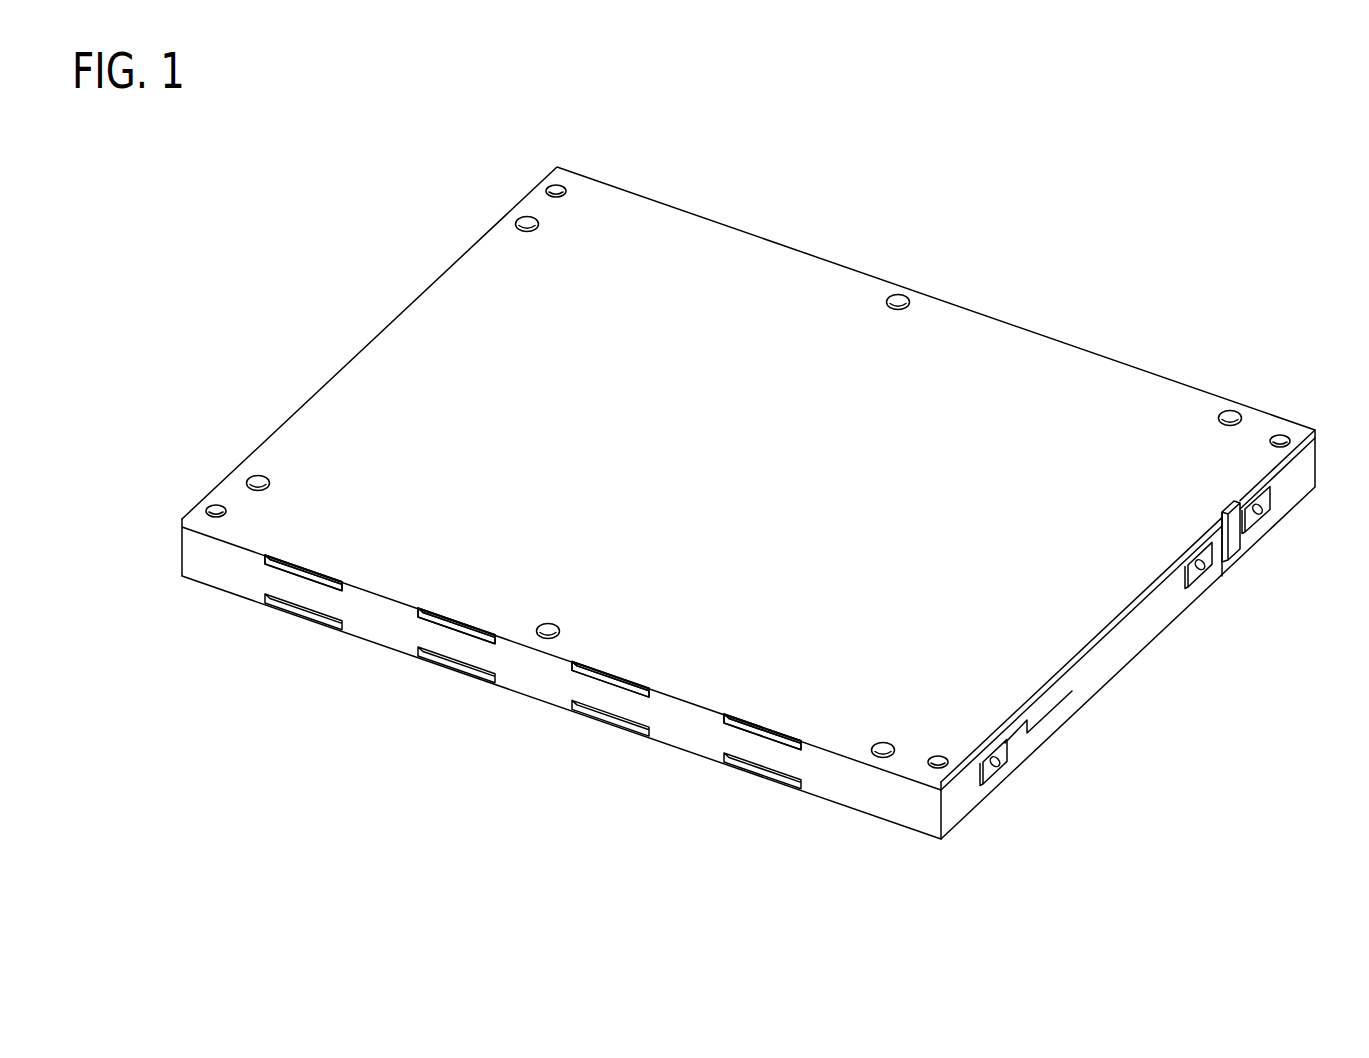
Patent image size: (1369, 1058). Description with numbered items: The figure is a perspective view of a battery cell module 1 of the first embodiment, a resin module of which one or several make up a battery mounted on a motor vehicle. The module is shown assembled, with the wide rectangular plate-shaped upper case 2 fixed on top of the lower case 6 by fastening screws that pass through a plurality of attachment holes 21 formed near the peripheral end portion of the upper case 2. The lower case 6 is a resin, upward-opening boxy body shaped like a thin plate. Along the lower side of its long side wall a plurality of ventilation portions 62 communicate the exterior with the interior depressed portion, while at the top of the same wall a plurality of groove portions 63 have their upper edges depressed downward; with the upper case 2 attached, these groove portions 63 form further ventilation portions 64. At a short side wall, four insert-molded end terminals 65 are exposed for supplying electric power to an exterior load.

The battery cell module 1 is at (385, 217).
The upper case 2 is at (392, 318).
The attachment holes 21 is at (520, 214).
The lower case 6 is at (1119, 672).
The ventilation portions 62 is at (298, 613).
The groove portions 63 is at (272, 565).
The ventilation portions 64 is at (693, 210).
The end terminals 65 is at (1011, 758).